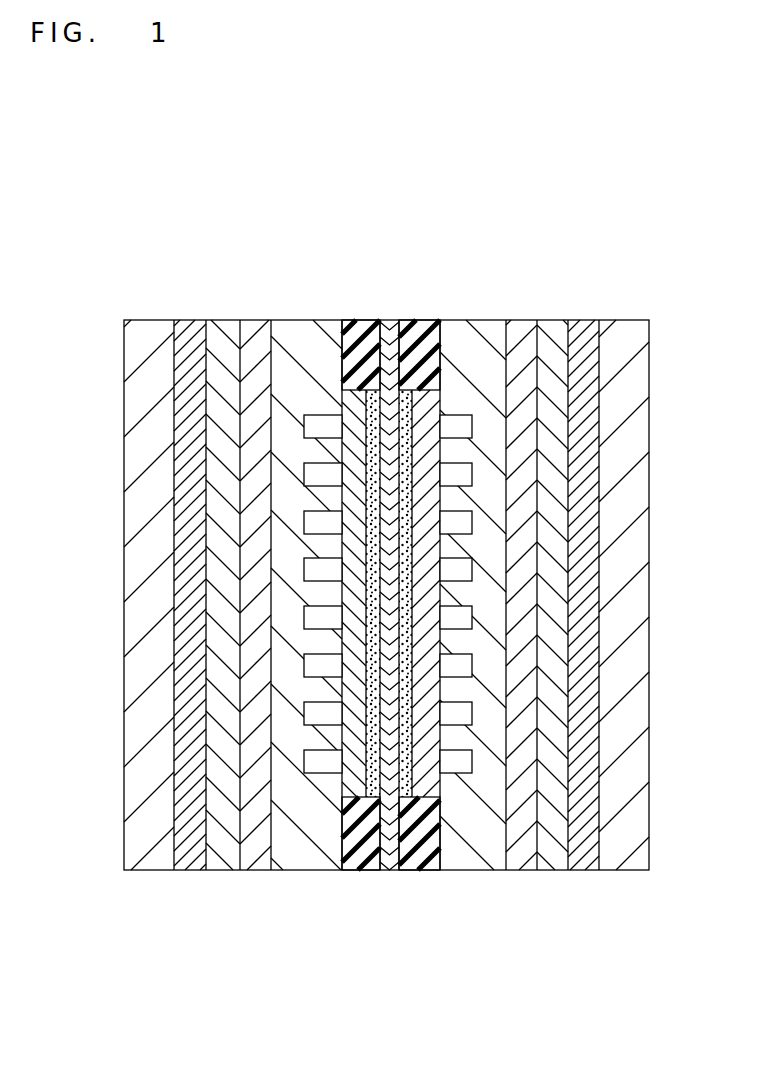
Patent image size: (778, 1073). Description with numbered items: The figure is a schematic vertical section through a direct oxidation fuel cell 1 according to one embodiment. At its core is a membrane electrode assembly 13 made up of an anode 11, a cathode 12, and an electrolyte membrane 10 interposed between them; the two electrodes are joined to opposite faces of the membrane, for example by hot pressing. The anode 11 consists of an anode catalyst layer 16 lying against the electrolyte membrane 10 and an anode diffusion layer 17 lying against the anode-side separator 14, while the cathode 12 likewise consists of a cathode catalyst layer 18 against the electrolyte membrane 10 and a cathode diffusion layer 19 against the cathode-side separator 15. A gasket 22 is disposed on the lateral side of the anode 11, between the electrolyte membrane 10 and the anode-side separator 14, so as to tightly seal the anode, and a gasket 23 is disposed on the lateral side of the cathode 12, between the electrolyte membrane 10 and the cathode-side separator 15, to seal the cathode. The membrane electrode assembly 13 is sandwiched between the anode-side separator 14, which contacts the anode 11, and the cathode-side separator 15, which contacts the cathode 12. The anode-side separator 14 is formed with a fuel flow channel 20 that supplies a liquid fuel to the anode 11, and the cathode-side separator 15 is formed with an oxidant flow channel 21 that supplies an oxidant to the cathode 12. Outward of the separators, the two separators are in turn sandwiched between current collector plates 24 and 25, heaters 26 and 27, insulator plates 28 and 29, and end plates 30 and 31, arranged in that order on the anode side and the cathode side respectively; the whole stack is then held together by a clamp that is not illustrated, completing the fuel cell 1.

The fuel cell 1 is at (556, 136).
The electrolyte membrane 10 is at (388, 400).
The anode 11 is at (333, 535).
The cathode 12 is at (448, 498).
The membrane electrode assembly 13 is at (392, 543).
The anode-side separator 14 is at (295, 345).
The cathode-side separator 15 is at (488, 353).
The anode catalyst layer 16 is at (374, 400).
The anode diffusion layer 17 is at (357, 400).
The cathode catalyst layer 18 is at (404, 400).
The cathode diffusion layer 19 is at (423, 400).
The fuel flow channel 20 is at (322, 767).
The oxidant flow channel 21 is at (458, 763).
The gasket 22 is at (364, 837).
The gasket 23 is at (422, 838).
The current collector plate 24 is at (253, 388).
The current collector plate 25 is at (520, 383).
The heater 26 is at (227, 467).
The heater 27 is at (557, 463).
The insulator plate 28 is at (192, 533).
The insulator plate 29 is at (585, 535).
The end plate 30 is at (153, 603).
The end plate 31 is at (622, 607).